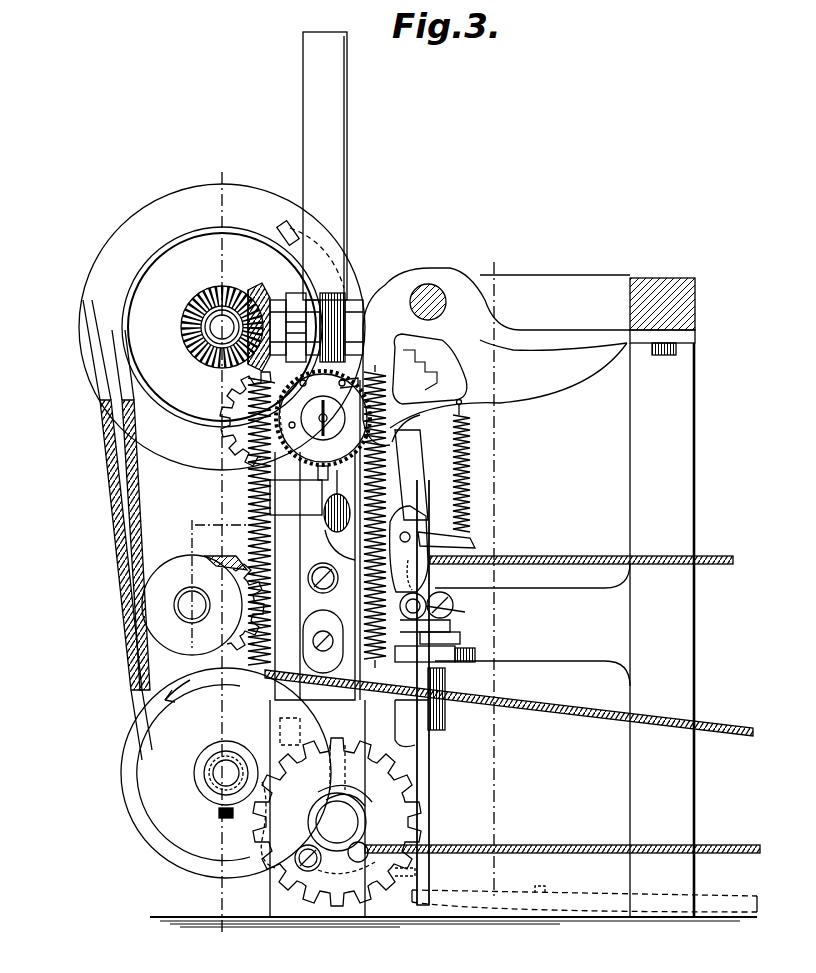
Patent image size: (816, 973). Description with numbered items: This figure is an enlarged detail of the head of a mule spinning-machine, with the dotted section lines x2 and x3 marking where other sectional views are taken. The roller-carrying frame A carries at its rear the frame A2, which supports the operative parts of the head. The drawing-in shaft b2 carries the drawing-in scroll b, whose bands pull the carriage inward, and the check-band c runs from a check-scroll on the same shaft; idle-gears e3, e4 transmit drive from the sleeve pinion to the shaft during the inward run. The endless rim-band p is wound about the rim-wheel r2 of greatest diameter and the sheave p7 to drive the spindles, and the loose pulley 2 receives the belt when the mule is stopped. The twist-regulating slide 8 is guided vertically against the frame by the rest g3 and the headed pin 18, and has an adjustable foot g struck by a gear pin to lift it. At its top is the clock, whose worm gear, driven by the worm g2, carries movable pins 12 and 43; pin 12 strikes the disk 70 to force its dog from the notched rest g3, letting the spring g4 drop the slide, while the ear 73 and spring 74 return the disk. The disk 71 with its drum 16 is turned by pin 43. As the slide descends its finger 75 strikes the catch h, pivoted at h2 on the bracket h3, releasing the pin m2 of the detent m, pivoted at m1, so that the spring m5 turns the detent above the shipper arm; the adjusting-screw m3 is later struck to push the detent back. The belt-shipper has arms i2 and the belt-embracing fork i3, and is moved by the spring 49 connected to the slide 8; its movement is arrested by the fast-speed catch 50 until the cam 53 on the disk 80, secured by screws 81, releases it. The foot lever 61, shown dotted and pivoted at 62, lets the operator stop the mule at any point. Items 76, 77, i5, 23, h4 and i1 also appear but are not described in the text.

The roller-carrying frame A is at (453, 591).
The frame A2 is at (347, 152).
The dotted section line x2 is at (218, 551).
The dotted section line x3 is at (492, 571).
The rim-wheel of greatest diameter r2 is at (222, 327).
The loose pulley 2 is at (222, 327).
The bevel gear 76 is at (222, 286).
The bevel pinion 77 is at (262, 283).
The check-band c is at (222, 327).
The worm g2 is at (333, 293).
The arm i5 is at (282, 236).
The ear 73 is at (398, 425).
The spring 74 is at (395, 428).
The disk 71 is at (323, 418).
The drum 16 is at (323, 418).
The disk 70 is at (322, 383).
The movable pin 43 is at (348, 390).
The movable pin 12 is at (289, 426).
The spring g4 is at (248, 506).
The idle-gear e3 is at (240, 432).
The idle-gear e4 is at (229, 587).
The sheave p7 is at (192, 587).
The finger 75 is at (386, 604).
The twist-regulating slide 8 is at (317, 540).
The headed pin 18 is at (308, 570).
The rest g3 is at (296, 497).
The connection 23 is at (318, 472).
The spring 49 is at (358, 548).
The arm of belt-shipper i2 is at (415, 667).
The spring m5 is at (470, 470).
The detent m is at (468, 540).
The bracket h3 is at (408, 549).
The pivot of detent m1 is at (404, 528).
The screw h4 is at (453, 603).
The catch h is at (442, 606).
The pin of detent m2 is at (450, 626).
The pivot of catch h2 is at (460, 638).
The adjusting-screw m3 is at (475, 655).
The rim-band p is at (408, 530).
The rod i1 is at (509, 703).
The screws 81 is at (392, 840).
The drawing-in scroll b is at (226, 773).
The drawing-in shaft b2 is at (226, 773).
The adjustable foot g is at (337, 808).
The disk 80 is at (335, 829).
The fast-speed catch 50 is at (395, 735).
The fork of shipper-lever i3 is at (430, 692).
The cam 53 is at (396, 883).
The lever 61 is at (448, 893).
The pivot of lever 62 is at (551, 882).